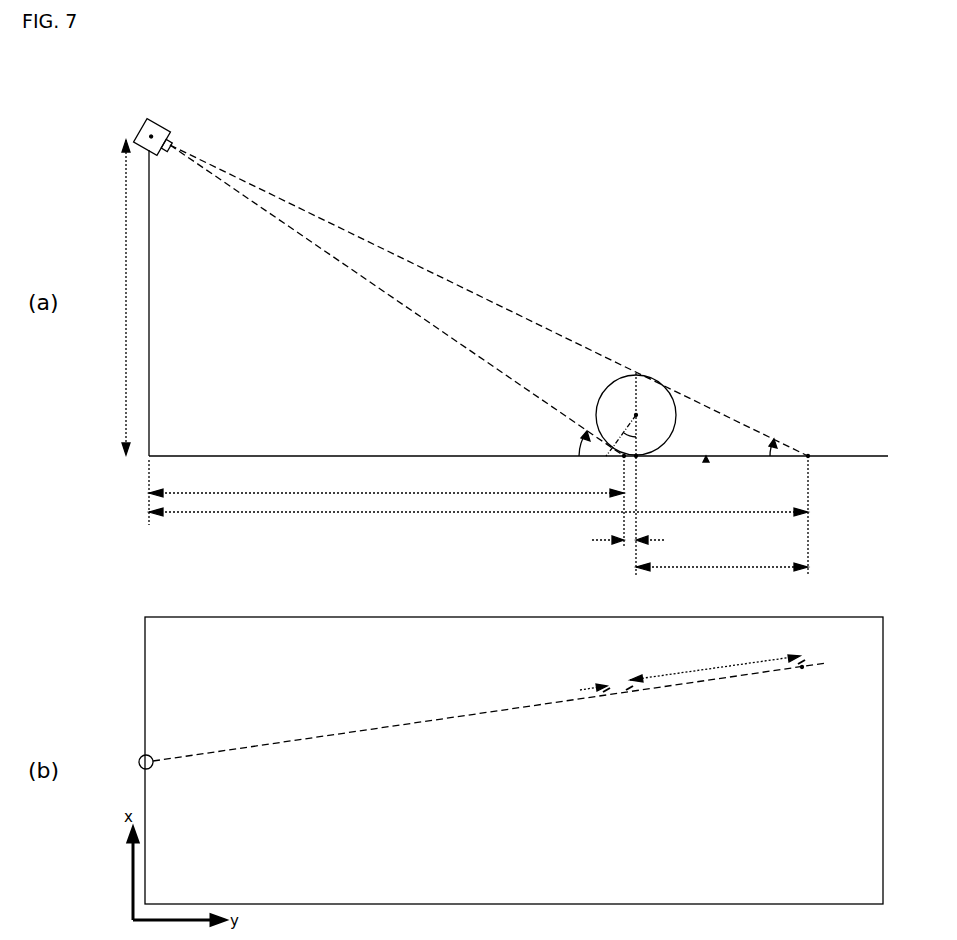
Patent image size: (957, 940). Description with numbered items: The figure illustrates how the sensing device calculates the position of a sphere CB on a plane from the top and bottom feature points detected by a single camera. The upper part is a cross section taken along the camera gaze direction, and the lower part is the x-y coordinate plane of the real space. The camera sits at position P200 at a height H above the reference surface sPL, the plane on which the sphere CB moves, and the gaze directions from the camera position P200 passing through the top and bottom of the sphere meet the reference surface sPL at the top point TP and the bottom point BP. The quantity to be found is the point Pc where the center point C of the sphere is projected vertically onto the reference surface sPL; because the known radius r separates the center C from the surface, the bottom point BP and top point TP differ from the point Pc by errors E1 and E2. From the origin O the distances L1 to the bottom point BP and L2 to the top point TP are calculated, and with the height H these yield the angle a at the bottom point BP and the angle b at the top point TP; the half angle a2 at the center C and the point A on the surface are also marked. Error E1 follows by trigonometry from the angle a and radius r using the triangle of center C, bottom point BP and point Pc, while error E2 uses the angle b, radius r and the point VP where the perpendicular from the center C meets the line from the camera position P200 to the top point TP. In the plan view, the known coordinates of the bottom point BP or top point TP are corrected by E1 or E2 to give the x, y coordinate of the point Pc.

The position of the single camera P200 is at (165, 112).
The height of the single camera position H is at (115, 297).
The origin O is at (132, 468).
The sphere CB is at (670, 398).
The point VP is at (634, 461).
The center point of the sphere C is at (622, 426).
The radius of the sphere r is at (643, 439).
The half angle a/2 a2 is at (626, 432).
The angle a is at (573, 443).
The angle b is at (761, 445).
The bottom point BP is at (618, 462).
The point Pc is at (640, 462).
The point A is at (705, 467).
The top point TP is at (810, 458).
The reference surface sPL is at (851, 456).
The distance L1 is at (386, 492).
The distance L2 is at (478, 500).
The error E1 is at (611, 611).
The error E2 is at (719, 612).